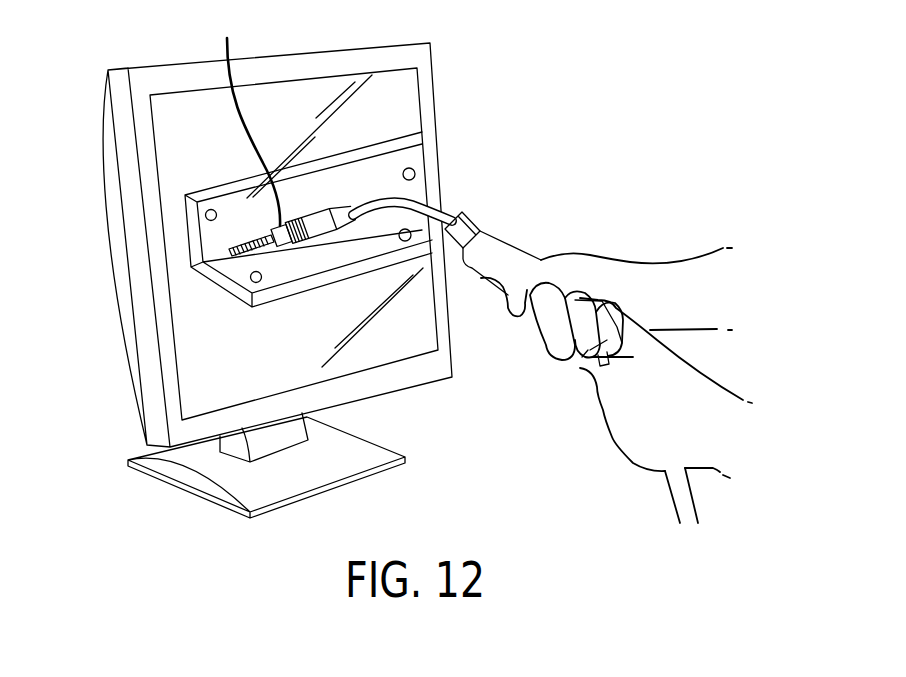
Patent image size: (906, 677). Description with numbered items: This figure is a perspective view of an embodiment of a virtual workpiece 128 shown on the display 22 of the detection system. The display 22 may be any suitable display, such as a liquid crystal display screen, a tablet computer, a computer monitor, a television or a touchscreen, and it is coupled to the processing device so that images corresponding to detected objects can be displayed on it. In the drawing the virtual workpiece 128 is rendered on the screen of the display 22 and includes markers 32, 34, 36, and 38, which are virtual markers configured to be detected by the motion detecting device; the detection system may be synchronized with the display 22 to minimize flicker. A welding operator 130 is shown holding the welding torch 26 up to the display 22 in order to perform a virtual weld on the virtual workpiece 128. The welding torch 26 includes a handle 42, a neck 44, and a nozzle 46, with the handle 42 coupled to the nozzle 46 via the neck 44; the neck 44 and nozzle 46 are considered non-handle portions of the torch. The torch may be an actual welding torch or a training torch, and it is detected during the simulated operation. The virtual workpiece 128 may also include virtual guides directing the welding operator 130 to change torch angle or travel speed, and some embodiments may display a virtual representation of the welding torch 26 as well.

The display 22 is at (128, 175).
The welding torch 26 is at (540, 137).
The marker 32 is at (260, 282).
The marker 34 is at (212, 209).
The marker 36 is at (415, 175).
The marker 38 is at (399, 236).
The handle 42 is at (515, 253).
The neck 44 is at (383, 200).
The nozzle 46 is at (284, 134).
The virtual workpiece 128 is at (190, 223).
The welding operator 130 is at (708, 302).